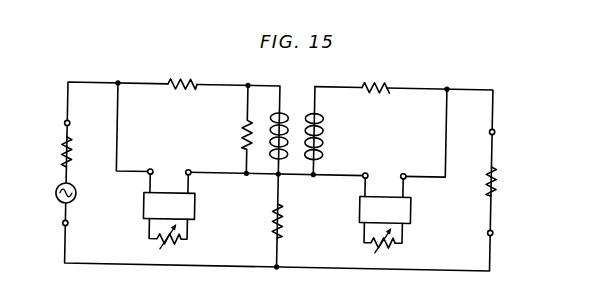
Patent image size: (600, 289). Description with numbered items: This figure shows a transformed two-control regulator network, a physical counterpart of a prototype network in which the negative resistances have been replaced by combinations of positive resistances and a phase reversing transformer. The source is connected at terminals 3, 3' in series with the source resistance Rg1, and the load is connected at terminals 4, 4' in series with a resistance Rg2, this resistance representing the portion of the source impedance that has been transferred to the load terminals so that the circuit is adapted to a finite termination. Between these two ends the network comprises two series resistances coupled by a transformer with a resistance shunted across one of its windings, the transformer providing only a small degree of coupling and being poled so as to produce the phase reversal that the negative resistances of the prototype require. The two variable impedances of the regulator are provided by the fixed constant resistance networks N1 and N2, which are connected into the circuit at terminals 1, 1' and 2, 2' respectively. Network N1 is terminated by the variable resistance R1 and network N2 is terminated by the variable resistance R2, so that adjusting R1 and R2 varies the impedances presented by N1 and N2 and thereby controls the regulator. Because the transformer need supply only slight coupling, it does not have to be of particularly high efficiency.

The input terminal of network N1 1 is at (153, 173).
The input terminal of network N1 1' is at (192, 173).
The input terminal of network N2 2 is at (364, 178).
The input terminal of network N2 2' is at (404, 178).
The source terminal 3 is at (61, 124).
The source terminal 3' is at (58, 224).
The load terminal 4 is at (497, 135).
The load terminal 4' is at (496, 235).
The fixed constant resistance network N1 is at (168, 205).
The fixed constant resistance network N2 is at (384, 210).
The variable resistance R1 is at (168, 241).
The variable resistance R2 is at (383, 245).
The source resistance Rg1 is at (51, 152).
The load-side resistance Rg2 is at (505, 182).